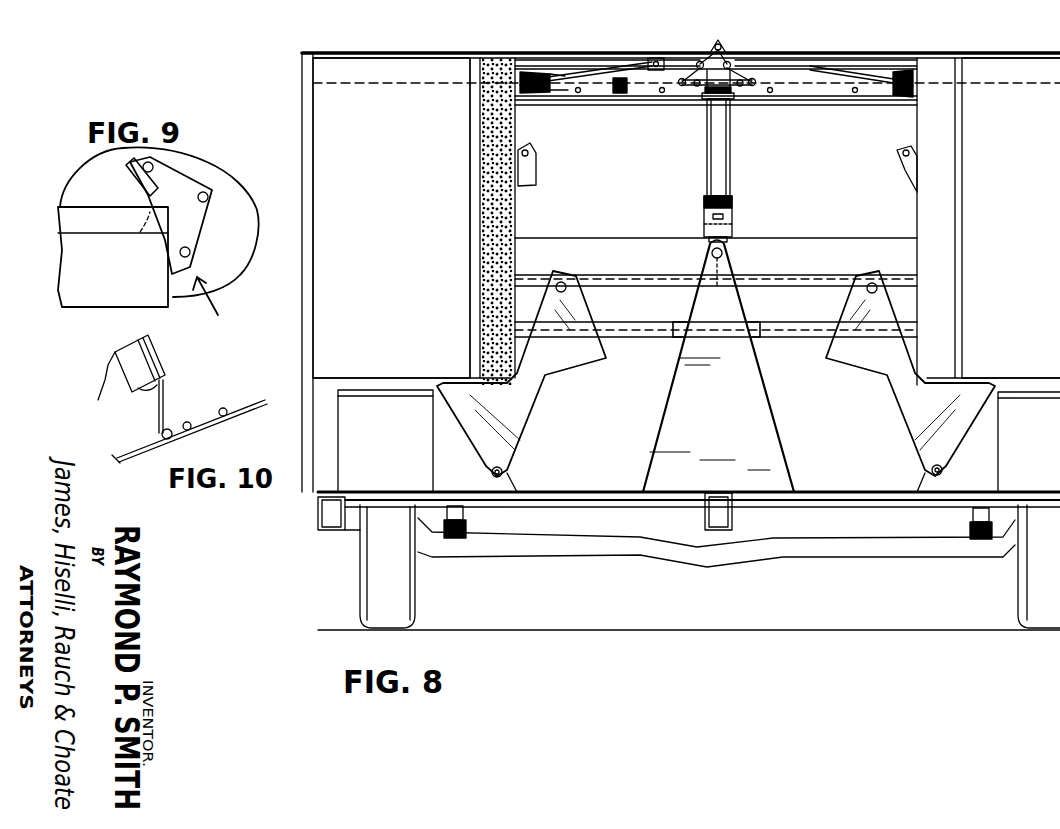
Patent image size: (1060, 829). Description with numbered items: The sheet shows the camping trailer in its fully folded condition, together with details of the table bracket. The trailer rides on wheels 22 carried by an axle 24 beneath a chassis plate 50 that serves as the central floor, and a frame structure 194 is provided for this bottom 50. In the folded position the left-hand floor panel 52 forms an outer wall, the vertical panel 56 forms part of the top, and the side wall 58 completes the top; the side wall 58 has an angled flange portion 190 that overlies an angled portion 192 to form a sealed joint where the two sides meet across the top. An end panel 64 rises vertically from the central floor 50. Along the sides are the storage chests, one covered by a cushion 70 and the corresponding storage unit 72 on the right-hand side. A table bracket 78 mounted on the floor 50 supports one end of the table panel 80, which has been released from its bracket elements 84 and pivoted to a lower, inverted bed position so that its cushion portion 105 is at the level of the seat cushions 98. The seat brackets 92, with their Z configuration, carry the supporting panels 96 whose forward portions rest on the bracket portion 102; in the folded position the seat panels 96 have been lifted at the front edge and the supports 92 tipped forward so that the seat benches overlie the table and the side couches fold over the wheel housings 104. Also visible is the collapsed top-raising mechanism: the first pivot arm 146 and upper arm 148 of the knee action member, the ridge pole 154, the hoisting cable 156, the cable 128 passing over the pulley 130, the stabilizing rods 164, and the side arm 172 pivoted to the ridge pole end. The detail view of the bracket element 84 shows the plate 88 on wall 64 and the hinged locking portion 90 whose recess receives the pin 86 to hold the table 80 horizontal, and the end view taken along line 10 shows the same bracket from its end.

In FIG. 9, the viewing direction arrow 10 is at (224, 296).
In FIG. 8, the wheels 22 is at (396, 591).
In FIG. 8, the axle 24 is at (705, 567).
In FIG. 8, the chassis plate 50 is at (820, 484).
In FIG. 8, the left-hand floor panel 52 is at (302, 102).
In FIG. 8, the vertical panel 56 is at (520, 53).
In FIG. 8, the vertical panel 58 is at (960, 58).
In FIG. 9, the end panel 64 is at (235, 250).
In FIG. 10, the end panel 64 is at (250, 406).
In FIG. 8, the cushion 70 is at (480, 195).
In FIG. 8, the storage unit 72 is at (380, 168).
In FIG. 8, the table bracket 78 is at (765, 430).
In FIG. 8, the table panel 80 is at (616, 330).
In FIG. 9, the table panel 80 is at (96, 208).
In FIG. 10, the table panel 80 is at (150, 344).
In FIG. 8, the bracket element 84 is at (530, 178).
In FIG. 9, the bracket element 84 is at (196, 216).
In FIG. 10, the bracket element 84 is at (190, 418).
In FIG. 9, the pin 86 is at (140, 234).
In FIG. 10, the pin 86 is at (140, 394).
In FIG. 10, the plate 88 is at (228, 406).
In FIG. 10, the hinged locking portion 90 is at (184, 406).
In FIG. 8, the seat brackets 92 is at (516, 432).
In FIG. 8, the supporting panel 96 is at (646, 278).
In FIG. 8, the cushion 98 is at (595, 264).
In FIG. 8, the portion of the bracket 102 is at (553, 301).
In FIG. 8, the wheel housings 104 is at (1032, 446).
In FIG. 8, the cushion portion 105 is at (604, 310).
In FIG. 8, the cable 128 is at (546, 94).
In FIG. 8, the pulley 130 is at (650, 60).
In FIG. 8, the first pivot arm 146 is at (706, 213).
In FIG. 8, the upper arm 148 is at (712, 170).
In FIG. 8, the ridge pole 154 is at (706, 92).
In FIG. 8, the cable 156 is at (605, 107).
In FIG. 8, the rods 164 is at (706, 100).
In FIG. 8, the side arm 172 is at (752, 88).
In FIG. 8, the angled flange portion 190 is at (724, 46).
In FIG. 8, the angled portion 192 is at (714, 47).
In FIG. 8, the frame structure 194 is at (336, 532).